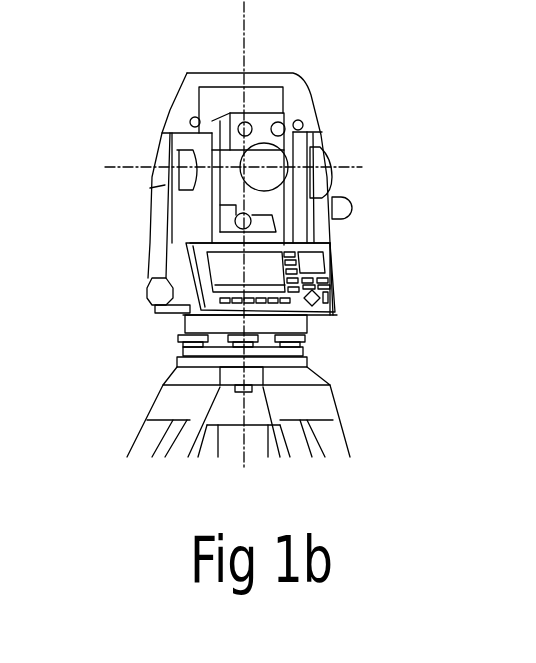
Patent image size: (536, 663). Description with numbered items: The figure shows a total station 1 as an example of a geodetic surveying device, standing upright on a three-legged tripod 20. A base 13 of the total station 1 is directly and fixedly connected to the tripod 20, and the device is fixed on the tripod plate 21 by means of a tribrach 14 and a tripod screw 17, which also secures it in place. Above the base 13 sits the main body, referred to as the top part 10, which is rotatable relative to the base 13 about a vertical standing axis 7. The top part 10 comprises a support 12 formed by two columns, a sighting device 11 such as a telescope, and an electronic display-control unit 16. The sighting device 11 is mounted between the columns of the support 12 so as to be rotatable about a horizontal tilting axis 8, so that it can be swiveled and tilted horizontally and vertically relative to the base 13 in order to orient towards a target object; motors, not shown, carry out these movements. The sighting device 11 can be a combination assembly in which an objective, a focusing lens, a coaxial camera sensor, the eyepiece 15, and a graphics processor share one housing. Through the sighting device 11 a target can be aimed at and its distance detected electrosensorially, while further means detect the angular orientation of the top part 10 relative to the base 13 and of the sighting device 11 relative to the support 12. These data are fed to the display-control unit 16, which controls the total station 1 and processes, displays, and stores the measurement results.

The total station 1 is at (447, 274).
The vertical standing axis 7 is at (242, 55).
The horizontal tilting axis 8 is at (333, 170).
The top part 10 is at (110, 116).
The sighting device 11 is at (262, 120).
The support 12 is at (332, 199).
The base 13 is at (187, 316).
The tribrach 14 is at (305, 335).
The eyepiece 15 is at (257, 184).
The display-control unit 16 is at (323, 303).
The tripod screw 17 is at (253, 387).
The tripod 20 is at (163, 408).
The tripod plate 21 is at (187, 351).